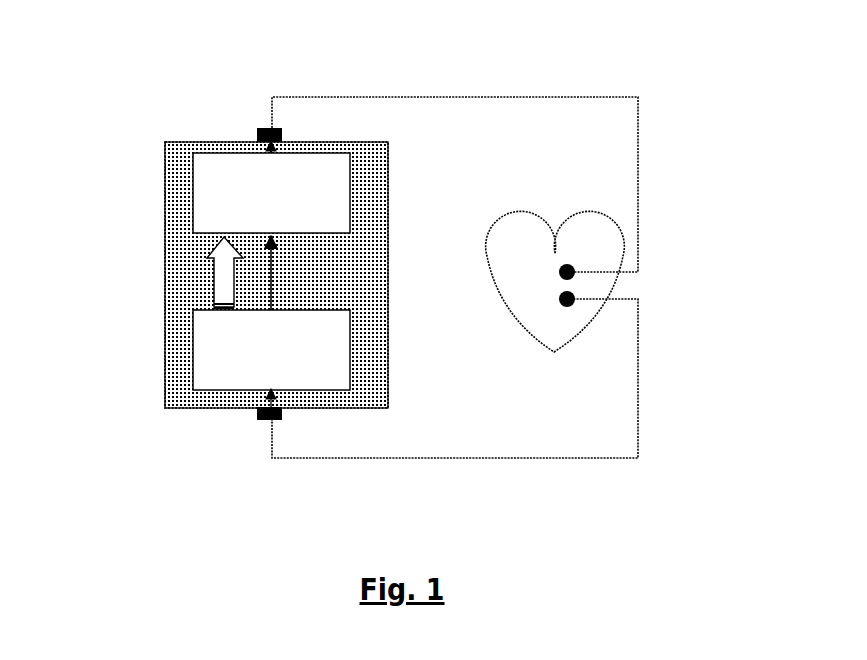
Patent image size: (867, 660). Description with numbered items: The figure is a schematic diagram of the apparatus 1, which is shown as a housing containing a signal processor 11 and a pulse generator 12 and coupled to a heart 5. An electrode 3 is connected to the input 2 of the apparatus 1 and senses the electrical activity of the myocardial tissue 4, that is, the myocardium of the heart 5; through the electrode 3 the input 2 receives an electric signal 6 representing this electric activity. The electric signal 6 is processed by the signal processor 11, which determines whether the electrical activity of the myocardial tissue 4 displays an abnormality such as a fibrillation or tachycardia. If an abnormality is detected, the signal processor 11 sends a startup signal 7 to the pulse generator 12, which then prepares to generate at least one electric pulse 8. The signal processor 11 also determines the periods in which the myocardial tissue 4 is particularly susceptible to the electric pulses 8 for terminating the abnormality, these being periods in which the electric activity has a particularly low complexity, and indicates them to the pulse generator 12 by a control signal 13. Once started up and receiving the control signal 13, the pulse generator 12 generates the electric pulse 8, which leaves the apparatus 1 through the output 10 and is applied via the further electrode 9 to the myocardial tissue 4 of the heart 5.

The apparatus 1 is at (162, 128).
The input 2 is at (257, 414).
The electrode 3 is at (638, 398).
The myocardial tissue 4 is at (566, 322).
The heart 5 is at (623, 237).
The electric signal 6 is at (258, 406).
The startup signal 7 is at (271, 280).
The electric pulse 8 is at (263, 147).
The further electrode 9 is at (533, 97).
The output 10 is at (262, 128).
The signal processor 11 is at (193, 352).
The pulse generator 12 is at (193, 191).
The control signal 13 is at (213, 283).